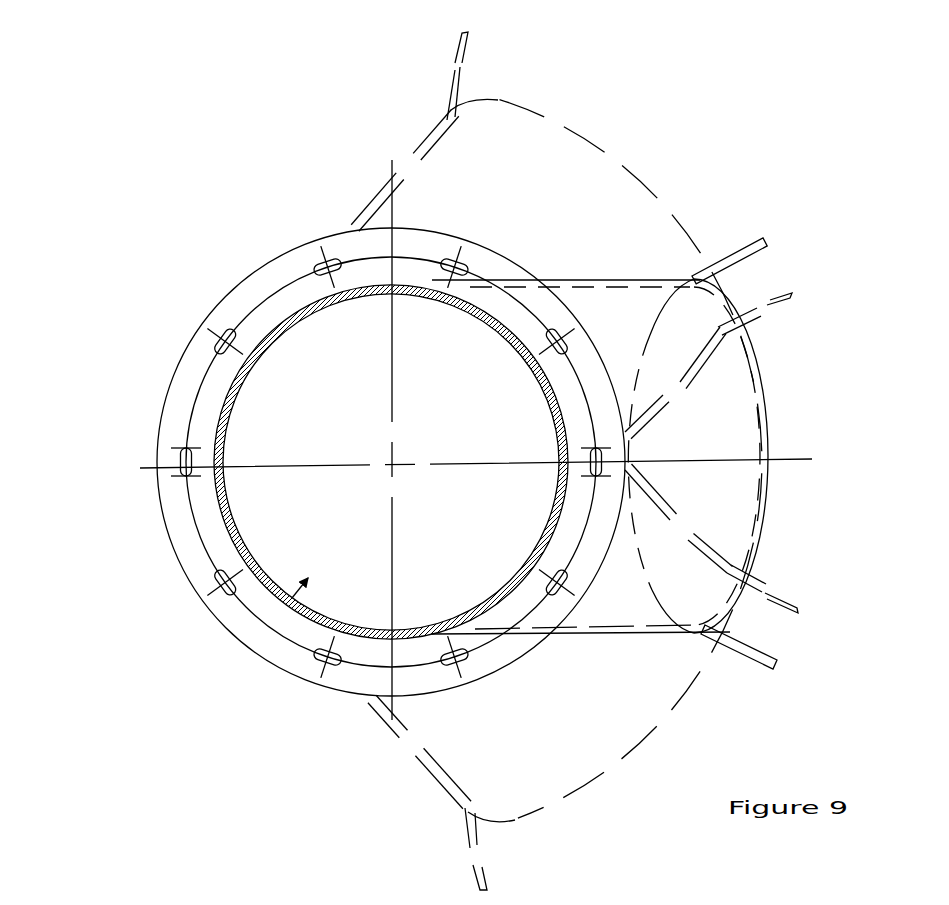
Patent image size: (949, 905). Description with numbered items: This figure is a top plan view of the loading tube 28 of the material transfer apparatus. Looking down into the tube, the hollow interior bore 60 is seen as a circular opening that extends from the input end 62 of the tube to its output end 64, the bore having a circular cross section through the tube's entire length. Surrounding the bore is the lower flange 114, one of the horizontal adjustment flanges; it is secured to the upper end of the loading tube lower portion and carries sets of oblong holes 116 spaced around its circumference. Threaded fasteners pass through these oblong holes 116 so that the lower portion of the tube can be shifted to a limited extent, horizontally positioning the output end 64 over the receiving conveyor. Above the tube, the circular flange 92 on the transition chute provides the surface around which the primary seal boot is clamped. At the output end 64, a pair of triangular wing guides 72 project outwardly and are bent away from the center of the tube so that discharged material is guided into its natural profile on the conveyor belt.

The loading tube 28 is at (372, 200).
The interior bore 60 is at (288, 600).
The input end 62 is at (215, 495).
The output end 64 is at (765, 422).
The wing guides 72 is at (741, 248).
The circular flange 92 is at (265, 280).
The lower flange 114 is at (173, 408).
The oblong holes 116 is at (463, 258).